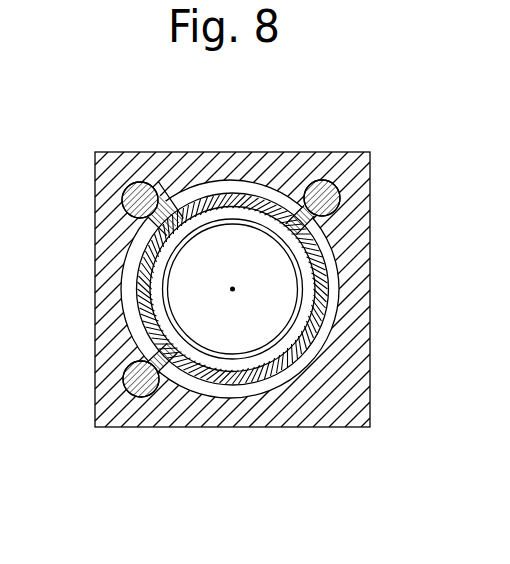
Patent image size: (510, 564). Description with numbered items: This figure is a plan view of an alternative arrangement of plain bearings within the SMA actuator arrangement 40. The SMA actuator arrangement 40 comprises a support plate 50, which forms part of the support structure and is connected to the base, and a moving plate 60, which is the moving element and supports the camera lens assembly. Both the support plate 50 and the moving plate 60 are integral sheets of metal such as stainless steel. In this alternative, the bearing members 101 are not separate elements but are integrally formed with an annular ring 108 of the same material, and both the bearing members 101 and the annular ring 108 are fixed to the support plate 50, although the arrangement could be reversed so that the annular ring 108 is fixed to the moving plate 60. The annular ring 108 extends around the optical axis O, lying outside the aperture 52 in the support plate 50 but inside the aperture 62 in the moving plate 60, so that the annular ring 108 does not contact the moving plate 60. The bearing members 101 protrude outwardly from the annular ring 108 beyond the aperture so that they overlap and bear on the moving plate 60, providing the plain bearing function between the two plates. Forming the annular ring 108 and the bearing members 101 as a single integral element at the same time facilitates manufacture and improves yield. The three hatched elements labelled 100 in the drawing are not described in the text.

The SMA actuator arrangement 40 is at (70, 163).
The moving plate 60 is at (320, 395).
The aperture in the moving plate 62 is at (328, 341).
The aperture in the support plate 52 is at (165, 279).
The annular ring 108 is at (312, 270).
The support plate 50 is at (213, 365).
The retaining arm 100 is at (169, 171).
The bearing members 101 is at (140, 188).
The optical axis O is at (232, 286).